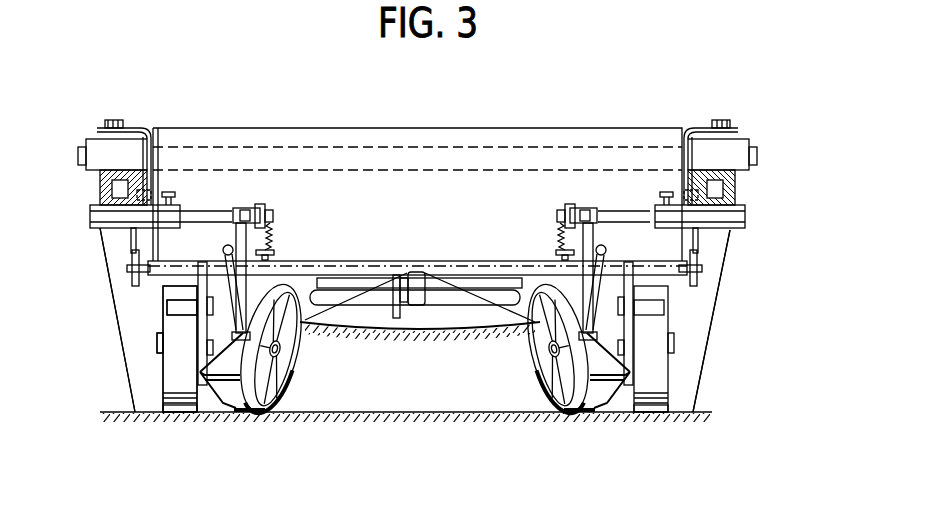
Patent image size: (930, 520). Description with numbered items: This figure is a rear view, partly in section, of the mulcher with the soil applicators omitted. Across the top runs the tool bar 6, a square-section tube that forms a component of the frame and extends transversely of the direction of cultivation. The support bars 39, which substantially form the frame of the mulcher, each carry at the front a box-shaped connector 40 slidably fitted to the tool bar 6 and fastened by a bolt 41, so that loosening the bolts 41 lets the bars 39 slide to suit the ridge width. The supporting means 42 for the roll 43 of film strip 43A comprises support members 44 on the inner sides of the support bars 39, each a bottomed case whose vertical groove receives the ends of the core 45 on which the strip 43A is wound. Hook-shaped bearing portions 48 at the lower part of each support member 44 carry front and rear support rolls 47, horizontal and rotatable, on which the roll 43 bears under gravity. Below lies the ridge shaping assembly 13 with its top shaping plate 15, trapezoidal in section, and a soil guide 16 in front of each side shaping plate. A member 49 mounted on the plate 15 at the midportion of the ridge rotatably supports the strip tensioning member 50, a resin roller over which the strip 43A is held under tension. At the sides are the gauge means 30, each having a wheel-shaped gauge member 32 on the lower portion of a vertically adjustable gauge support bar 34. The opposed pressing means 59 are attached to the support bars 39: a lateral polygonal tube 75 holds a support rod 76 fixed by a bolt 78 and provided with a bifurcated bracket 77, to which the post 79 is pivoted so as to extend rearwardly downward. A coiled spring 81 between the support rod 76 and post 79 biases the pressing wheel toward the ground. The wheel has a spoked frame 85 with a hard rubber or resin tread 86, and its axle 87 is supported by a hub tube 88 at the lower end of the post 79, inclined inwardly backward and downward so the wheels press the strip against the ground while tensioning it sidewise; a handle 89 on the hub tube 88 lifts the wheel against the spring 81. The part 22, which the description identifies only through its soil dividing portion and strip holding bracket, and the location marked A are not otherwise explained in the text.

The tool bar 6 is at (78, 155).
The ridge shaping assembly 13 is at (462, 330).
The top shaping plate 15 is at (356, 308).
The soil guide 16 is at (122, 350).
The wheel support frame 22 is at (220, 404).
The gauge means 30 is at (102, 409).
The wheel-shaped gauge member 32 is at (190, 413).
The gauge support bar 34 is at (185, 300).
The support bars 39 is at (100, 190).
The box-shaped connector 40 is at (98, 142).
The bolt 41 is at (115, 119).
The supporting means 42 is at (118, 271).
The roll 43 is at (333, 128).
The film strip 43A is at (308, 319).
The support members 44 is at (130, 243).
The core 45 is at (148, 195).
The support rolls 47 is at (362, 271).
The bearing portions 48 is at (133, 278).
The member 49 is at (404, 320).
The strip tensioning member 50 is at (425, 272).
The pressing means 59 is at (286, 290).
The lateral polygonal tube 75 is at (105, 218).
The support rod 76 is at (215, 214).
The bifurcated bracket 77 is at (262, 212).
The bolt 78 is at (176, 196).
The post 79 is at (205, 321).
The coiled spring 81 is at (275, 240).
The spoked frame 85 is at (284, 404).
The tread 86 is at (252, 413).
The axle 87 is at (302, 335).
The hub tube 88 is at (112, 386).
The handle 89 is at (238, 292).
The direction A is at (428, 343).